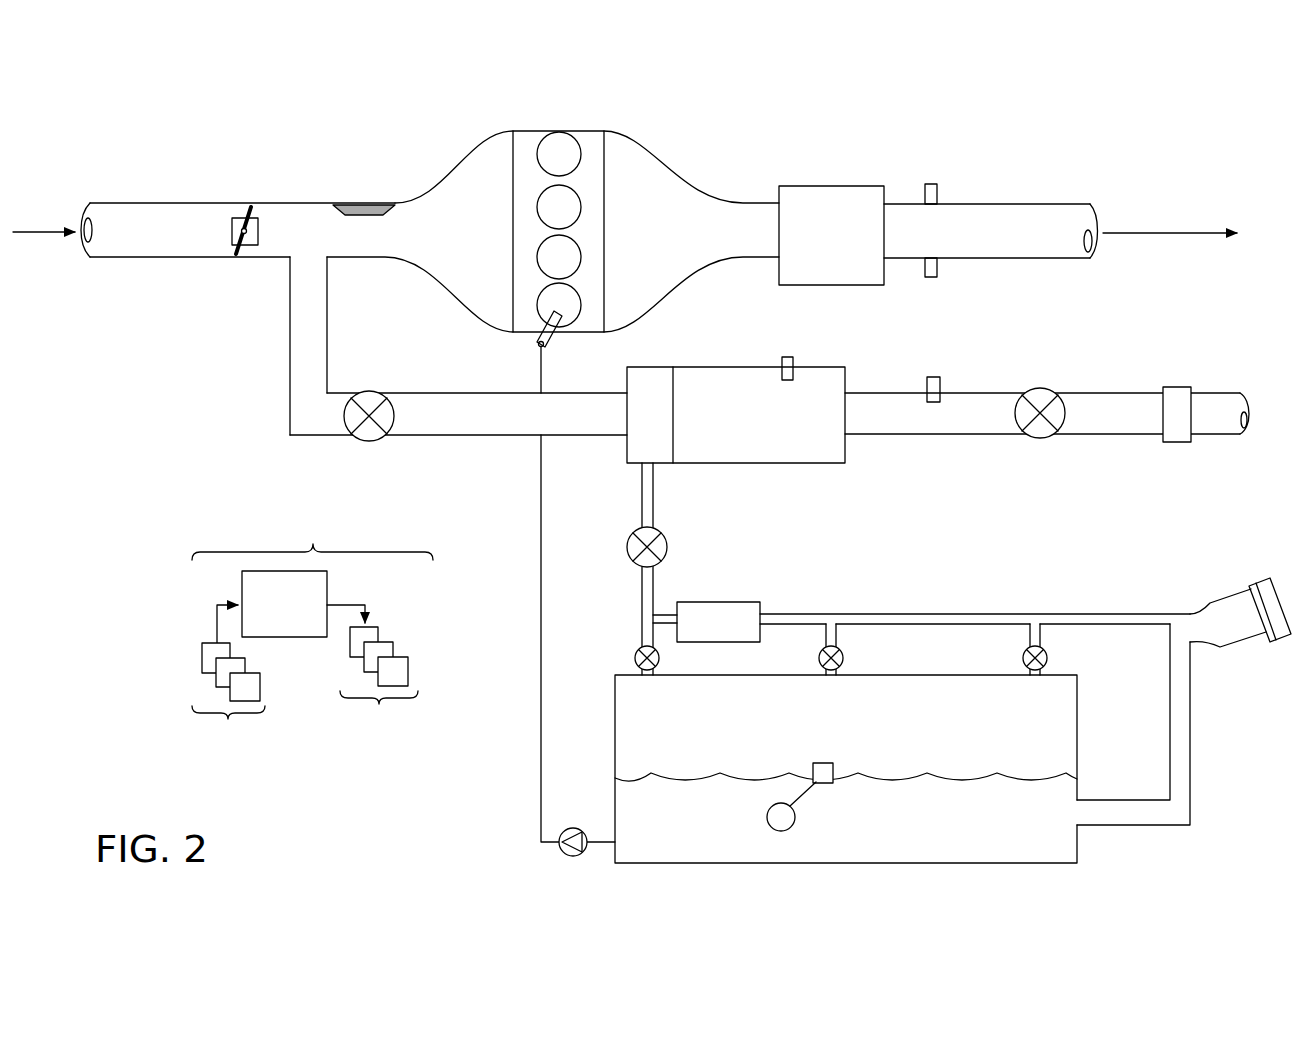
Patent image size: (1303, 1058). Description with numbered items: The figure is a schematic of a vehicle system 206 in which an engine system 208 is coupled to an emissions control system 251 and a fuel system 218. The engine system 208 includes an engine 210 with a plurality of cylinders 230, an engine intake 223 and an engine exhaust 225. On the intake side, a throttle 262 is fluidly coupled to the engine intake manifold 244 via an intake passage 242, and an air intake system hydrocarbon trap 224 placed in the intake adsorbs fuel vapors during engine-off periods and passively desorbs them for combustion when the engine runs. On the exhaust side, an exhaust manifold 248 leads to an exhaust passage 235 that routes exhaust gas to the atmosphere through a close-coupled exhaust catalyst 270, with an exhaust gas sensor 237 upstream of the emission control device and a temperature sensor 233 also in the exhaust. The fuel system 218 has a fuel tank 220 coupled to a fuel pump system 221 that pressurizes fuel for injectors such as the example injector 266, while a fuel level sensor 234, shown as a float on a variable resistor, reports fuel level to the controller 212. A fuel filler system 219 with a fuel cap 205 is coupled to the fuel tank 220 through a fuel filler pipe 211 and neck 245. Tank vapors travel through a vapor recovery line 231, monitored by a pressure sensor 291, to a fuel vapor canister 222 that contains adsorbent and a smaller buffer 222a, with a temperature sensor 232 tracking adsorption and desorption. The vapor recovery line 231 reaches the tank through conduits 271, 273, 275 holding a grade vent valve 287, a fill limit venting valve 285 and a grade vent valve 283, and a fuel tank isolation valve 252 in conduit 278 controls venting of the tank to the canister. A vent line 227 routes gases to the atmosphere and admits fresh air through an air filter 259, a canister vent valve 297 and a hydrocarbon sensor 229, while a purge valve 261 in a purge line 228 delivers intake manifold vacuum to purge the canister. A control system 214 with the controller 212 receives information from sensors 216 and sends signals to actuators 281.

The vehicle system 206 is at (102, 137).
The engine intake 223 is at (297, 138).
The air intake system hydrocarbon trap 224 is at (362, 204).
The throttle 262 is at (259, 233).
The intake passage 242 is at (278, 259).
The engine intake manifold 244 is at (475, 237).
The engine 210 is at (605, 213).
The cylinders 230 is at (581, 154).
The injector 266 is at (549, 343).
The exhaust manifold 248 is at (690, 237).
The engine exhaust 225 is at (780, 118).
The exhaust catalyst 270 is at (818, 186).
The engine system 208 is at (893, 130).
The exhaust passage 235 is at (1045, 204).
The exhaust gas sensor 237 is at (925, 197).
The temperature sensor 233 is at (925, 270).
The purge line 228 is at (482, 425).
The purge valve 261 is at (372, 392).
The fuel vapor canister 222 is at (845, 385).
The buffer 222a is at (645, 367).
The temperature sensor 232 is at (784, 357).
The vent line 227 is at (928, 425).
The emissions control system 251 is at (1234, 350).
The hydrocarbon sensor 229 is at (932, 377).
The canister vent valve 297 is at (1045, 389).
The air filter 259 is at (1184, 388).
The conduit 278 is at (642, 496).
The fuel tank isolation valve 252 is at (640, 560).
The conduit 271 is at (653, 632).
The grade vent valve 287 is at (636, 657).
The pressure sensor 291 is at (760, 610).
The vapor recovery line 231 is at (1093, 612).
The conduit 273 is at (826, 634).
The fill limit venting valve 285 is at (843, 659).
The conduit 275 is at (1030, 633).
The grade vent valve 283 is at (1047, 656).
The fuel tank 220 is at (1077, 769).
The fuel level sensor 234 is at (826, 763).
The fuel pump system 221 is at (575, 828).
The fuel filler pipe 211 is at (1190, 720).
The fuel system 218 is at (1207, 790).
The filler neck 245 is at (1268, 630).
The fuel cap 205 is at (1272, 578).
The fuel filler system 219 is at (1240, 574).
The control system 214 is at (312, 531).
The controller 212 is at (291, 607).
The sensors 216 is at (228, 702).
The actuators 281 is at (379, 685).